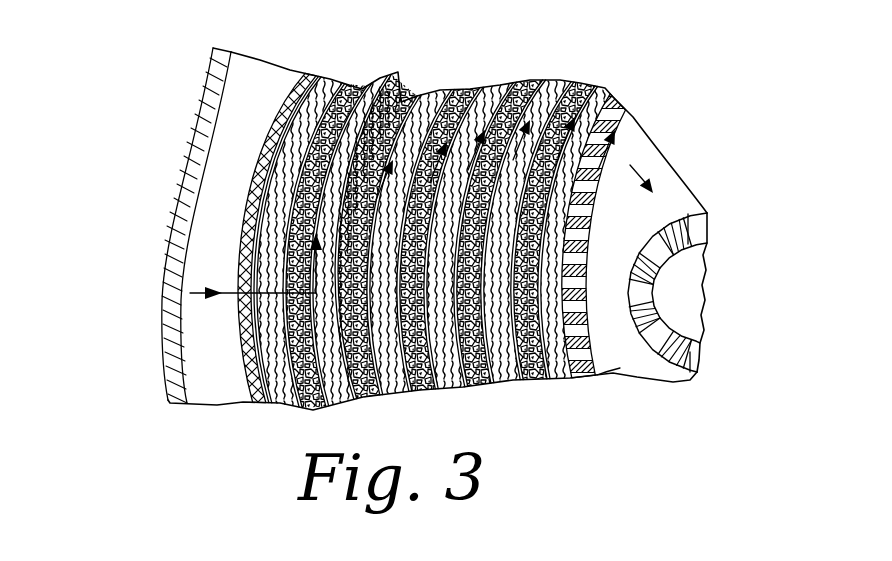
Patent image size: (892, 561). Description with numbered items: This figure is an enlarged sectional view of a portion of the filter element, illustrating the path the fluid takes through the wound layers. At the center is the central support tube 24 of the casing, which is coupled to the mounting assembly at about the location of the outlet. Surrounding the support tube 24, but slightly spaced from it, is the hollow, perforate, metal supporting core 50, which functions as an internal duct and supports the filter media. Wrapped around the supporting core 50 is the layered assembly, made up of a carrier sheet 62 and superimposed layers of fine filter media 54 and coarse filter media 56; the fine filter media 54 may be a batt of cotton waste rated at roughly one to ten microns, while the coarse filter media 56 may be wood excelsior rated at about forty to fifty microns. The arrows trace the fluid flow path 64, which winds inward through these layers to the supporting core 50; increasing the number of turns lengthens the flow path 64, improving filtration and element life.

The central support tube 24 is at (703, 260).
The supporting core 50 is at (617, 370).
The fine filter media 54 is at (401, 102).
The coarse filter media 56 is at (560, 378).
The carrier sheet 62 is at (550, 92).
The fluid flow path 64 is at (252, 266).